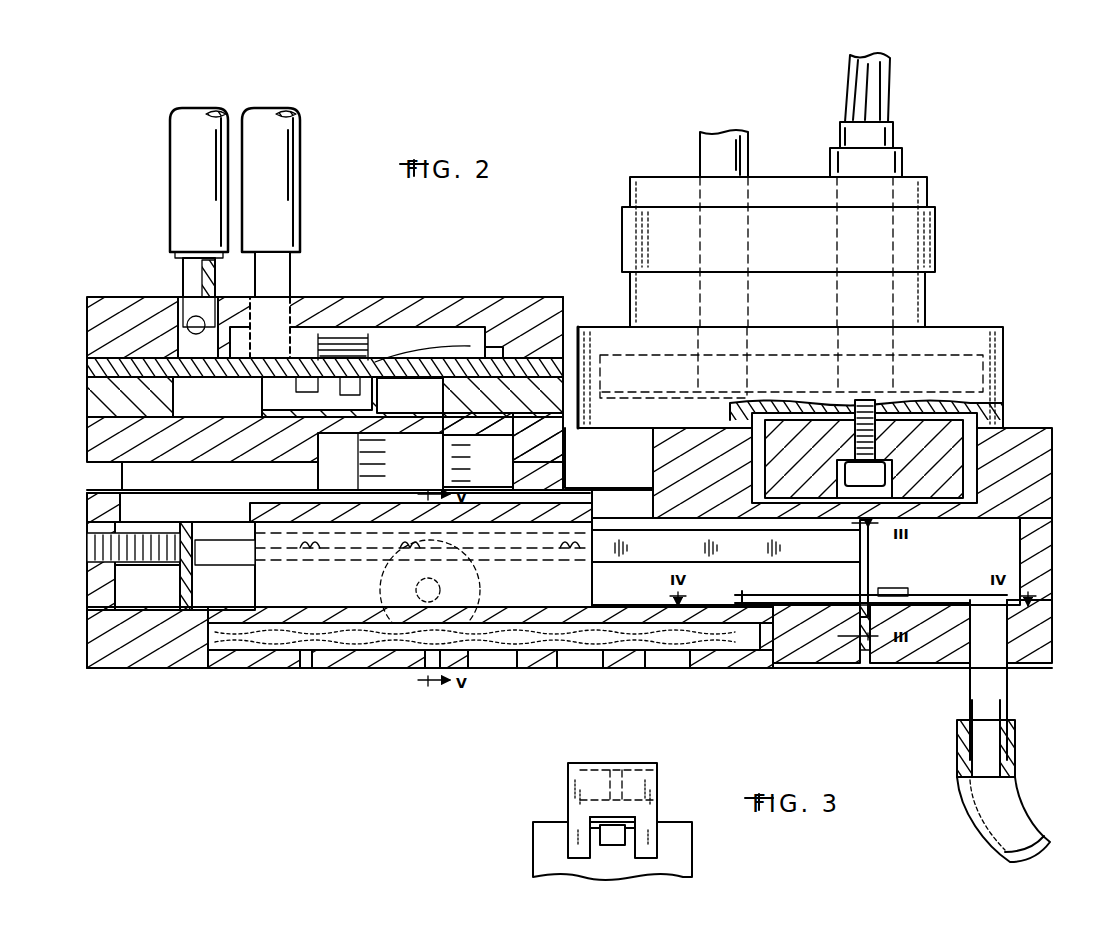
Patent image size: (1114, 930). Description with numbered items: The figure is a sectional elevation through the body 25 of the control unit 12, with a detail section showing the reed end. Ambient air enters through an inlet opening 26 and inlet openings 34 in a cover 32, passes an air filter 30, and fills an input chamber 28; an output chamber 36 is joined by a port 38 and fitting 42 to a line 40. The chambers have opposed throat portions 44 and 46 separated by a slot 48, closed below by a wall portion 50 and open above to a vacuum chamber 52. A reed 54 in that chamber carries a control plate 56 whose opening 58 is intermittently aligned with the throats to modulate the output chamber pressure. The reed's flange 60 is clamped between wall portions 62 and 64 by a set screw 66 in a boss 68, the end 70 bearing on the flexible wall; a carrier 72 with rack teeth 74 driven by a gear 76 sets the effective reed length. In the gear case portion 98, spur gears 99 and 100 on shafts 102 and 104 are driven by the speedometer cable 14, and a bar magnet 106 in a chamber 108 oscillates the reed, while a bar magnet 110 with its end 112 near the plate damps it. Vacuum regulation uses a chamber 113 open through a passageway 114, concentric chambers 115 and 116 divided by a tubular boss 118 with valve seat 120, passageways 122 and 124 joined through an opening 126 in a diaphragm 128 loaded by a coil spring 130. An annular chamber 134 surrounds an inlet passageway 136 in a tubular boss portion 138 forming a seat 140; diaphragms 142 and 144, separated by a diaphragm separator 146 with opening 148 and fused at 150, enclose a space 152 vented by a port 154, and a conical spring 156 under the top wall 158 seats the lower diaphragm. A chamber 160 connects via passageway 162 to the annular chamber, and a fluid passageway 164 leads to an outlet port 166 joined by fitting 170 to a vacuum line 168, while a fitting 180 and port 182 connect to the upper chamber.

In FIG. 2, the control unit 12 is at (450, 292).
In FIG. 2, the speedometer cable 14 is at (886, 94).
In FIG. 2, the body 25 is at (1040, 478).
In FIG. 2, the inlet opening 26 is at (765, 665).
In FIG. 2, the input chamber 28 is at (752, 597).
In FIG. 2, the air filter 30 is at (570, 640).
In FIG. 2, the cover 32 is at (698, 665).
In FIG. 2, the inlet openings 34 is at (650, 666).
In FIG. 2, the output chamber 36 is at (978, 598).
In FIG. 2, the port 38 is at (1010, 672).
In FIG. 2, the line 40 is at (1018, 804).
In FIG. 2, the fitting 42 is at (1015, 706).
In FIG. 2, the throat portion 44 is at (822, 596).
In FIG. 3, the throat portion 44 is at (620, 838).
In FIG. 2, the throat portion 46 is at (885, 592).
In FIG. 2, the slot 48 is at (856, 622).
In FIG. 2, the wall portion 50 is at (862, 650).
In FIG. 2, the vacuum chamber 52 is at (980, 520).
In FIG. 2, the reed 54 is at (680, 540).
In FIG. 3, the reed 54 is at (657, 775).
In FIG. 2, the control plate 56 is at (868, 540).
In FIG. 3, the control plate 56 is at (568, 785).
In FIG. 3, the opening 58 is at (592, 845).
In FIG. 2, the flange 60 is at (214, 562).
In FIG. 2, the wall portion 62 is at (190, 605).
In FIG. 2, the wall portion 64 is at (215, 600).
In FIG. 2, the set screw 66 is at (100, 553).
In FIG. 2, the boss 68 is at (134, 565).
In FIG. 2, the end 70 is at (200, 550).
In FIG. 2, the carrier 72 is at (592, 520).
In FIG. 2, the rack teeth 74 is at (292, 565).
In FIG. 2, the gear 76 is at (480, 575).
In FIG. 2, the gear case portion 98 is at (1003, 360).
In FIG. 2, the spur gear 99 is at (915, 352).
In FIG. 2, the spur gear 100 is at (620, 355).
In FIG. 2, the shaft 102 is at (927, 283).
In FIG. 2, the shaft 104 is at (750, 243).
In FIG. 2, the bar magnet 106 is at (1003, 398).
In FIG. 2, the chamber 108 is at (975, 445).
In FIG. 2, the bar magnet 110 is at (908, 592).
In FIG. 2, the end 112 is at (868, 580).
In FIG. 2, the chamber 113 is at (322, 495).
In FIG. 2, the passageway 114 is at (584, 490).
In FIG. 2, the chamber 115 is at (436, 412).
In FIG. 2, the chamber 116 is at (508, 470).
In FIG. 2, the tubular boss 118 is at (443, 460).
In FIG. 2, the valve seat 120 is at (387, 497).
In FIG. 2, the passageway 122 is at (208, 462).
In FIG. 2, the passageway 124 is at (160, 512).
In FIG. 2, the opening 126 is at (122, 476).
In FIG. 2, the diaphragm 128 is at (240, 490).
In FIG. 2, the coil spring 130 is at (486, 463).
In FIG. 2, the annular chamber 134 is at (265, 395).
In FIG. 2, the inlet passageway 136 is at (311, 408).
In FIG. 2, the tubular boss portion 138 is at (351, 408).
In FIG. 2, the seat 140 is at (374, 366).
In FIG. 2, the diaphragm 142 is at (258, 360).
In FIG. 2, the diaphragm 144 is at (201, 395).
In FIG. 2, the diaphragm separator 146 is at (87, 367).
In FIG. 2, the opening 148 is at (183, 337).
In FIG. 2, the fused portion 150 is at (330, 390).
In FIG. 2, the space 152 is at (318, 344).
In FIG. 2, the port 154 is at (468, 349).
In FIG. 2, the conical spring 156 is at (386, 330).
In FIG. 2, the top wall 158 is at (346, 312).
In FIG. 2, the chamber 160 is at (483, 320).
In FIG. 2, the passageway 162 is at (556, 330).
In FIG. 2, the fluid passageway 164 is at (190, 410).
In FIG. 2, the outlet port 166 is at (180, 304).
In FIG. 2, the line 168 is at (170, 157).
In FIG. 2, the fitting 170 is at (216, 276).
In FIG. 2, the fitting 180 is at (292, 260).
In FIG. 2, the port 182 is at (288, 300).